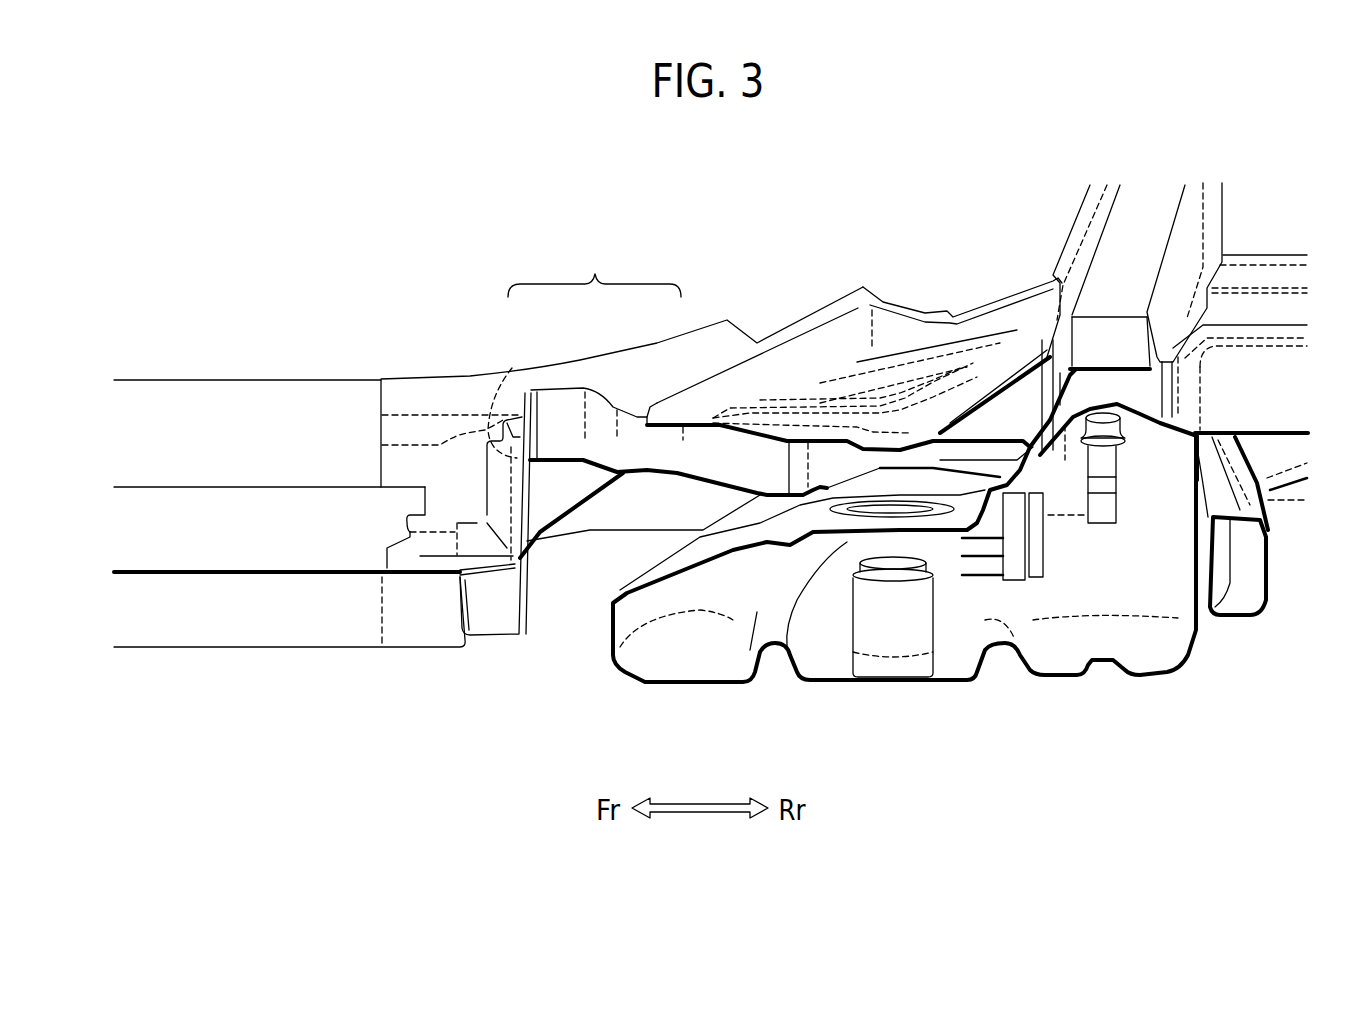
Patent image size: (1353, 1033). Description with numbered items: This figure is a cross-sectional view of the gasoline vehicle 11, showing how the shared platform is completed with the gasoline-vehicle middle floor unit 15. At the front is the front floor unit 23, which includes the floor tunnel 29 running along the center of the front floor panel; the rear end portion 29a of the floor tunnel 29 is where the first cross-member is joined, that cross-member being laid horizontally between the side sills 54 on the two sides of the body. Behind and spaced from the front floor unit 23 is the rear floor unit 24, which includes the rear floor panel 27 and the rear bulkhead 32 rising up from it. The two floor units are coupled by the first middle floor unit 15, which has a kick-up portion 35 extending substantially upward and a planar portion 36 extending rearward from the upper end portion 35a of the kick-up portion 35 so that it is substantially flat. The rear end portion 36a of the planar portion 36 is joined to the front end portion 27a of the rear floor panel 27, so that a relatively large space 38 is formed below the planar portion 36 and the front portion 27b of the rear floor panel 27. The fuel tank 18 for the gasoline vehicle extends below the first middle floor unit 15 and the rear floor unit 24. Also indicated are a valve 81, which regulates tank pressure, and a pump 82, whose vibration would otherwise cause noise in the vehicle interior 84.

The gasoline vehicle 11 is at (478, 322).
The gasoline-vehicle middle floor unit 15 is at (594, 269).
The fuel tank for a gasoline vehicle 18 is at (840, 690).
The front floor unit 23 is at (213, 372).
The rear floor unit 24 is at (963, 437).
The rear floor panel 27 is at (1020, 400).
The front end portion of the rear floor panel 27a is at (808, 457).
The front portion of the rear floor panel 27b is at (933, 440).
The floor tunnel 29 is at (230, 572).
The rear end portion of the floor tunnel 29a is at (417, 558).
The rear bulkhead 32 is at (1217, 203).
The kick-up portion 35 is at (487, 430).
The upper end portion of the kick-up portion 35a is at (505, 430).
The planar portion 36 is at (672, 437).
The rear end portion of the planar portion 36a is at (781, 457).
The space 38 is at (575, 581).
The side sill 54 is at (400, 382).
The valve 81 is at (1107, 463).
The pump 82 is at (920, 623).
The vehicle interior 84 is at (295, 456).